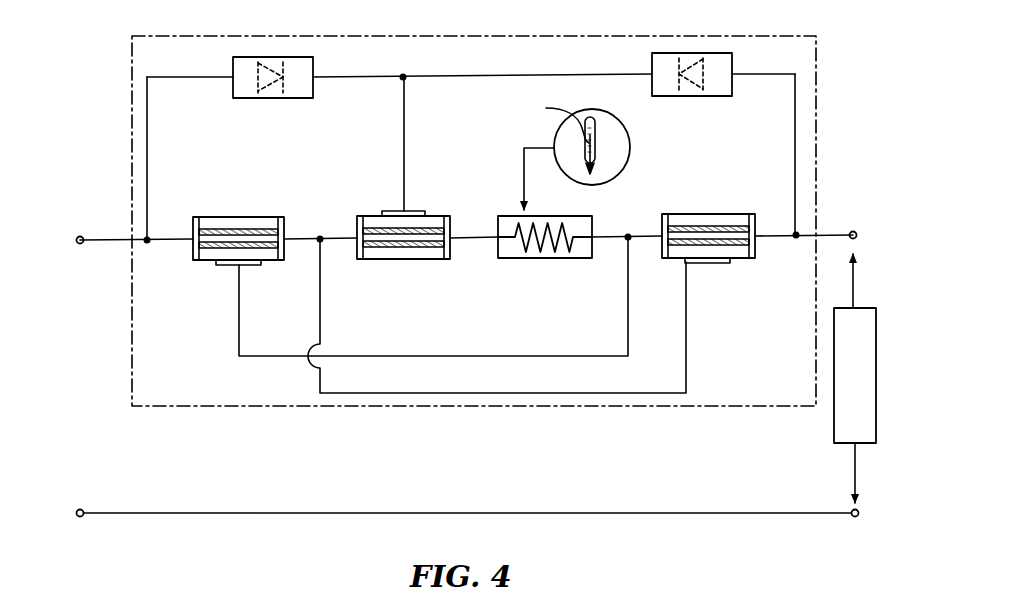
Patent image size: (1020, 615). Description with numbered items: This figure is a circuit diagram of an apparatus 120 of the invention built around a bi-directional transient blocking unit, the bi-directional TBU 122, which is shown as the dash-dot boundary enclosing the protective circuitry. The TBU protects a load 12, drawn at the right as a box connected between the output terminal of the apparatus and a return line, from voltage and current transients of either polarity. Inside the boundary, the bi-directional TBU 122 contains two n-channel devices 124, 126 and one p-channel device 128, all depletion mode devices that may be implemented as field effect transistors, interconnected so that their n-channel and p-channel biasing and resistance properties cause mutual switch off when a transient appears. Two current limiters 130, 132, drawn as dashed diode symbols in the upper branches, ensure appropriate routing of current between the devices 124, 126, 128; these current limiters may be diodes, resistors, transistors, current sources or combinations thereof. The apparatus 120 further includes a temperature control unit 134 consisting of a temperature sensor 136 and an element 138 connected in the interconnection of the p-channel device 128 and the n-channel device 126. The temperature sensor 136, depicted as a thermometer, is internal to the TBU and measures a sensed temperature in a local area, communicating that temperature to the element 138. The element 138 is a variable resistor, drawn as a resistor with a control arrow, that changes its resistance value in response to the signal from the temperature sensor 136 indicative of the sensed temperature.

The load 12 is at (834, 430).
The apparatus 120 is at (124, 105).
The bi-directional TBU 122 is at (816, 168).
The n-channel device 124 is at (258, 216).
The n-channel device 126 is at (735, 214).
The p-channel device 128 is at (420, 260).
The current limiter 130 is at (314, 90).
The current limiter 132 is at (683, 97).
The temperature control unit 134 is at (524, 266).
The temperature sensor 136 is at (623, 166).
The element 138 is at (504, 215).